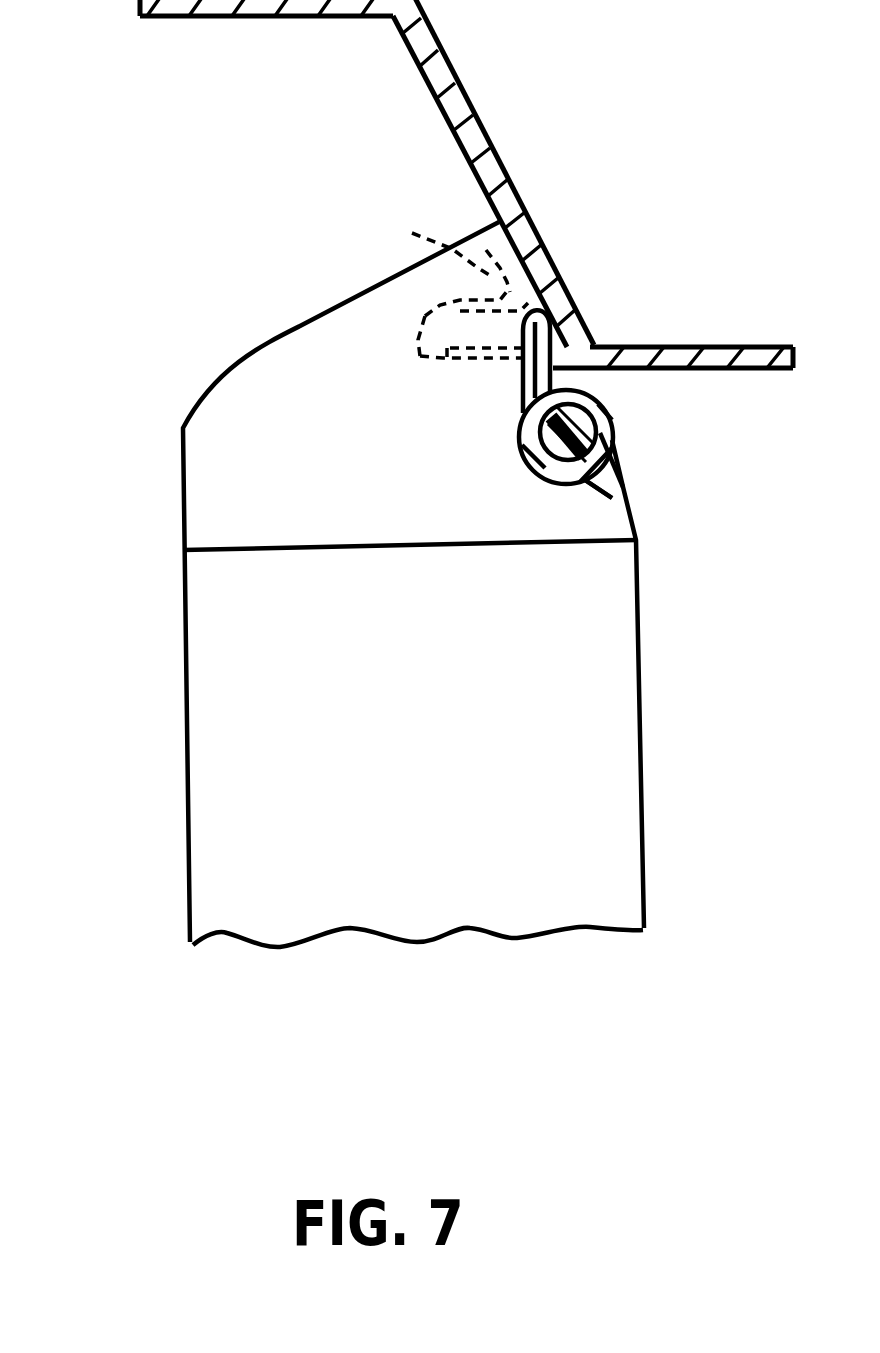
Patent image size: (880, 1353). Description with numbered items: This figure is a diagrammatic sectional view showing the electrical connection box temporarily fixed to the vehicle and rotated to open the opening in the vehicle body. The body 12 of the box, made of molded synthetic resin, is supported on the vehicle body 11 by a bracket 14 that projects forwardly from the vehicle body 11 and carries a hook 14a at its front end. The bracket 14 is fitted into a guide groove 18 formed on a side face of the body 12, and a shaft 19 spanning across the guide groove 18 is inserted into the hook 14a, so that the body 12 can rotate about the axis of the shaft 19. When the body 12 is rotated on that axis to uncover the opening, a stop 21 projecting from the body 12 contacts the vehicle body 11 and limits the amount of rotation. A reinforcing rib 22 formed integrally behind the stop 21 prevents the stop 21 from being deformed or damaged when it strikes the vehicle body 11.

The vehicle body 11 is at (456, 134).
The body 12 is at (188, 855).
The bracket 14 is at (518, 417).
The hook 14a is at (612, 498).
The guide groove 18 is at (338, 550).
The shaft 19 is at (600, 393).
The stop 21 is at (427, 244).
The reinforcing rib 22 is at (420, 356).